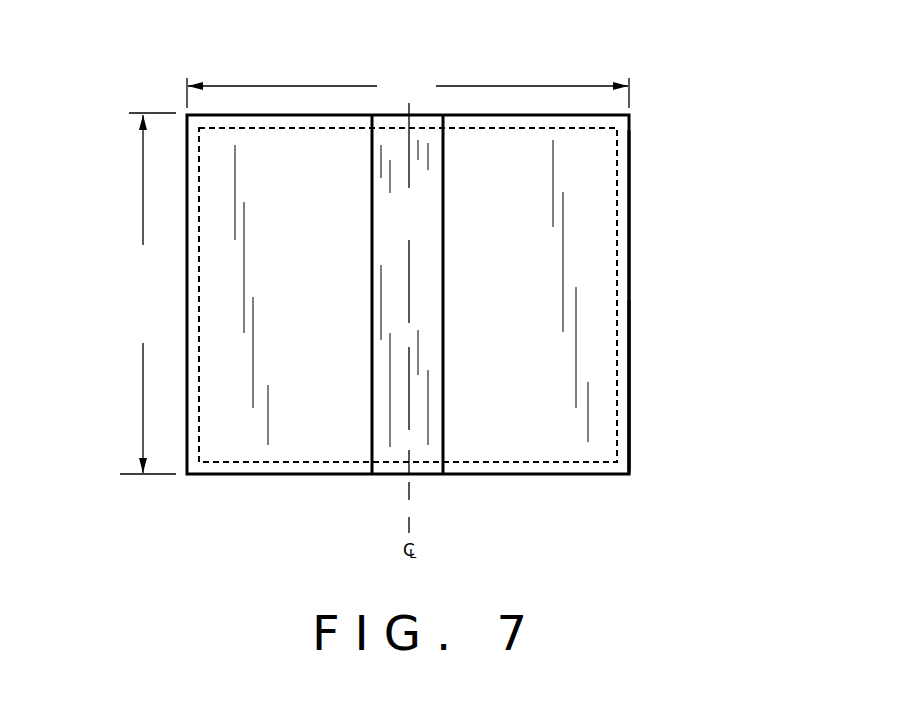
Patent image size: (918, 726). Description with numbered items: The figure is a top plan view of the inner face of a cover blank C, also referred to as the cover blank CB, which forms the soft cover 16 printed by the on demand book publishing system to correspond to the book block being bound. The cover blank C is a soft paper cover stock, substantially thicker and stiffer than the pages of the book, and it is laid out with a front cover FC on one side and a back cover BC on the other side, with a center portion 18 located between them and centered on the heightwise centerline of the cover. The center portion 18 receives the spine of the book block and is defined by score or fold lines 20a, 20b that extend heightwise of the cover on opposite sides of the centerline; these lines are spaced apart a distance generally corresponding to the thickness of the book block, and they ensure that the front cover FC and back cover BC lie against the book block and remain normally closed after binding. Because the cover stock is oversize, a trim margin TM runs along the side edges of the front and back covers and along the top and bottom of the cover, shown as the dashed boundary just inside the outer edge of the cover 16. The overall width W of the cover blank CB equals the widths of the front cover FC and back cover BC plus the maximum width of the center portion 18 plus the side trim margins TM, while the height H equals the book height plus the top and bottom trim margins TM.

The cover blank C is at (634, 143).
The cover blank CB is at (652, 265).
The soft cover 16 is at (655, 388).
The trim margin TM is at (628, 225).
The center portion 18 is at (374, 211).
The score or fold line 20a is at (372, 375).
The score or fold line 20b is at (443, 343).
The front cover FC is at (300, 431).
The back cover BC is at (526, 425).
The width W is at (408, 92).
The height H is at (148, 293).